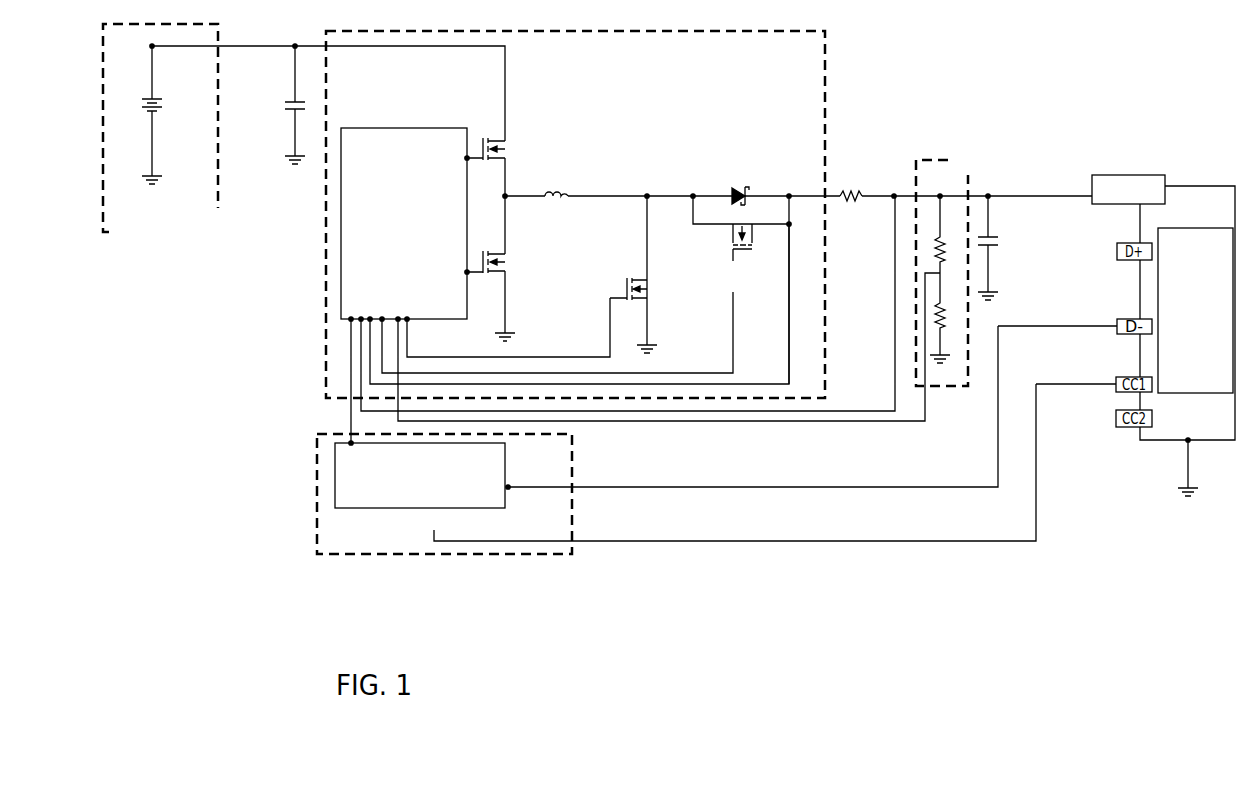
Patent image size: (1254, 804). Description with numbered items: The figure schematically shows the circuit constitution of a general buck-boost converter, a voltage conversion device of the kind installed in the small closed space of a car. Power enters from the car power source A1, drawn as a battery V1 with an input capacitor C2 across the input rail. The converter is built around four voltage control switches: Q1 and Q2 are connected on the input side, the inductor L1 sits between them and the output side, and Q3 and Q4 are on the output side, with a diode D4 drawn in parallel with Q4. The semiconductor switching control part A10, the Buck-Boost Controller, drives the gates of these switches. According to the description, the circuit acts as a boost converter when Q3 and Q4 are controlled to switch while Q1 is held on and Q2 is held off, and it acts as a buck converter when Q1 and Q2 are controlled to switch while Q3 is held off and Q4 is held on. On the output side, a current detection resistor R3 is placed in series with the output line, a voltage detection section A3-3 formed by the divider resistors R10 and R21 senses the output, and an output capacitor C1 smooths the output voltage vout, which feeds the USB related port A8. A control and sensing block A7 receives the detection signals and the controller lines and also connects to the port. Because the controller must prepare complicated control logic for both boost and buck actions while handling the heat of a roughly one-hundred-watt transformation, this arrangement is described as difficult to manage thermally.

The car power source A1 is at (167, 155).
The battery voltage source 12V V1 is at (170, 115).
The input capacitor 47u C2 is at (304, 105).
The semiconductor switching control part A10 is at (405, 208).
The switch Q1 is at (518, 121).
The switch Q2 is at (515, 258).
The inductor L1 is at (553, 175).
The switch Q3 is at (626, 274).
The Schottky diode D4 is at (747, 175).
The switch Q4 is at (742, 290).
The current detection resistor 10m R3 is at (882, 146).
The voltage detection A3-3 is at (989, 250).
The voltage divider resistor R10 is at (951, 234).
The voltage divider resistor R21 is at (948, 318).
The output capacitor 47u C1 is at (997, 248).
The output voltage vout is at (1128, 189).
The USB related port A8 is at (1195, 310).
The control and sensing A7 is at (444, 494).